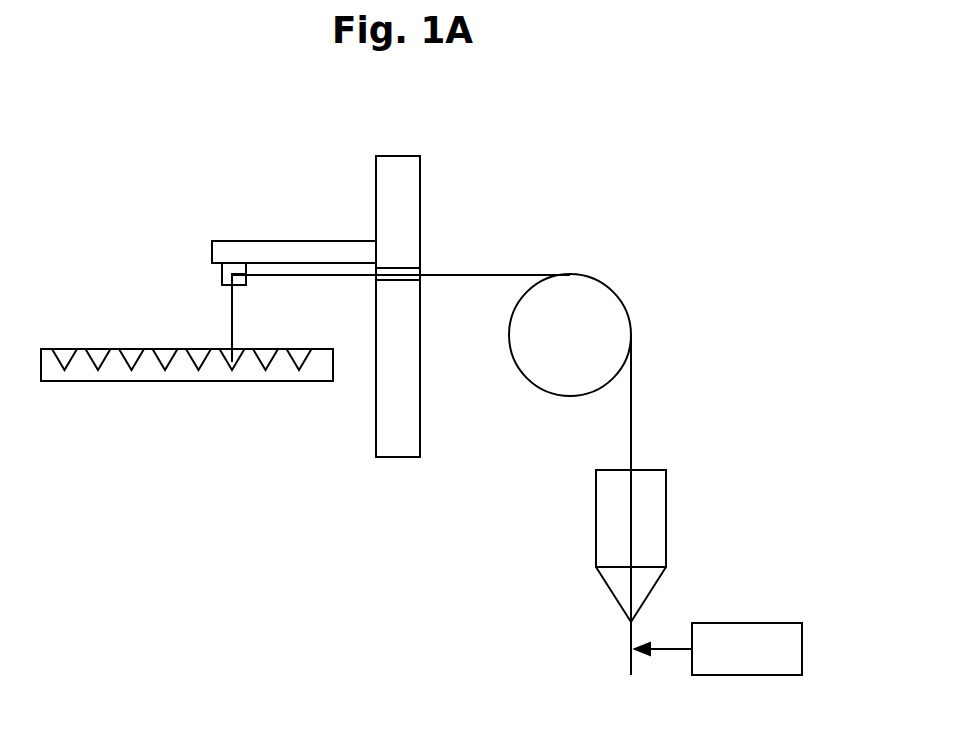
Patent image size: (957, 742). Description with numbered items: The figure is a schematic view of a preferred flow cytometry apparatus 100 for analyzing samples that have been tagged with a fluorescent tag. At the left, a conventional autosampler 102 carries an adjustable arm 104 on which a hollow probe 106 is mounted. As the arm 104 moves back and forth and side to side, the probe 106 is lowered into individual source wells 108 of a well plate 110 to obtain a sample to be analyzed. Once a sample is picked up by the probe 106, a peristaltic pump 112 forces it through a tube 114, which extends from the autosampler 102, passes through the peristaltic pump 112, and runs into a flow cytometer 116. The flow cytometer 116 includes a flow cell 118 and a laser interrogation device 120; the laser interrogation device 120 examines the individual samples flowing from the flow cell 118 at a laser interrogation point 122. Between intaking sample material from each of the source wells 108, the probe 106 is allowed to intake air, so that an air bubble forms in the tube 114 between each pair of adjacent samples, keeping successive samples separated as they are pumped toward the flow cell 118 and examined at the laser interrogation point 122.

The flow cytometry apparatus 100 is at (257, 152).
The autosampler 102 is at (413, 197).
The adjustable arm 104 is at (267, 252).
The hollow probe 106 is at (230, 327).
The source wells 108 is at (98, 360).
The well plate 110 is at (187, 362).
The peristaltic pump 112 is at (573, 322).
The tube 114 is at (487, 275).
The flow cytometer 116 is at (609, 546).
The flow cell 118 is at (652, 520).
The laser interrogation device 120 is at (747, 650).
The laser interrogation point 122 is at (618, 647).